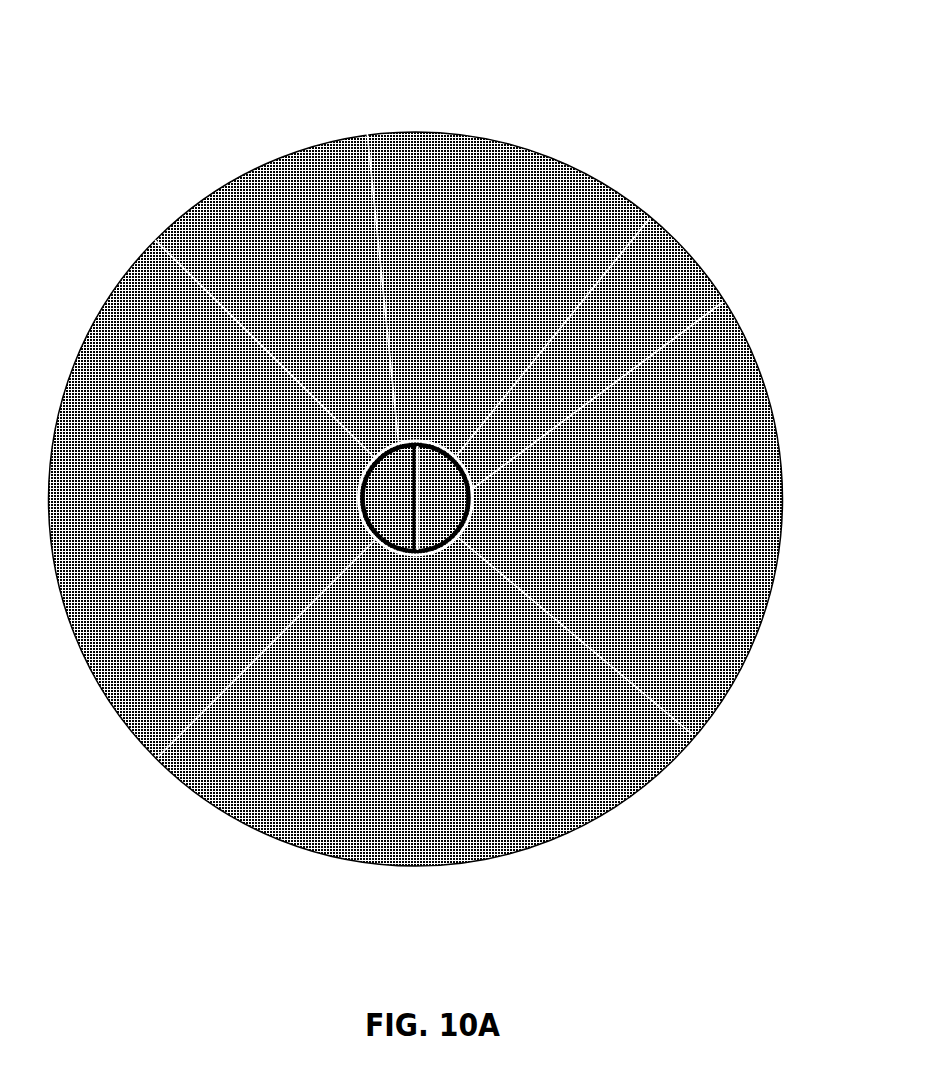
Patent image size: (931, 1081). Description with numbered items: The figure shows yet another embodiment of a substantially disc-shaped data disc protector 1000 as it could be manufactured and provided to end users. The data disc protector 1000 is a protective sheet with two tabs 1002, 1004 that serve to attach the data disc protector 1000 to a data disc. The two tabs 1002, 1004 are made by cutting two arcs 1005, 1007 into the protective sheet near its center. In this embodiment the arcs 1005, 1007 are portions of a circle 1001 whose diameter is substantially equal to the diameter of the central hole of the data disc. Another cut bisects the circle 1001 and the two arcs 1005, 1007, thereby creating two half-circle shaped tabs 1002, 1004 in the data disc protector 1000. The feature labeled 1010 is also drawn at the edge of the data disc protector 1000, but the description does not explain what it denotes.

The data disc protector 1000 is at (500, 97).
The circle 1001 is at (723, 302).
The tab 1002 is at (650, 218).
The tab 1004 is at (155, 240).
The arc 1005 is at (693, 735).
The arc 1007 is at (370, 150).
The sixth radial die boundary line 1010 is at (158, 757).